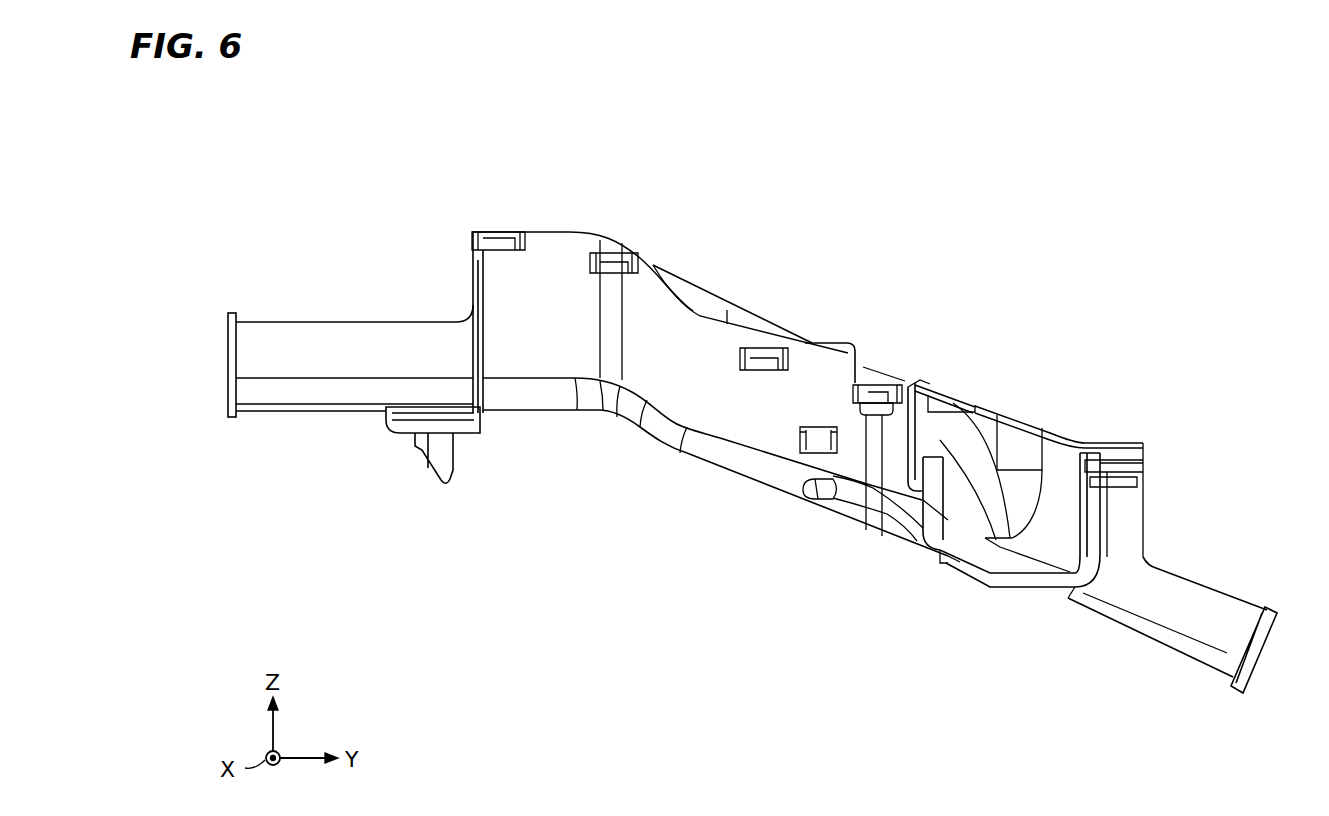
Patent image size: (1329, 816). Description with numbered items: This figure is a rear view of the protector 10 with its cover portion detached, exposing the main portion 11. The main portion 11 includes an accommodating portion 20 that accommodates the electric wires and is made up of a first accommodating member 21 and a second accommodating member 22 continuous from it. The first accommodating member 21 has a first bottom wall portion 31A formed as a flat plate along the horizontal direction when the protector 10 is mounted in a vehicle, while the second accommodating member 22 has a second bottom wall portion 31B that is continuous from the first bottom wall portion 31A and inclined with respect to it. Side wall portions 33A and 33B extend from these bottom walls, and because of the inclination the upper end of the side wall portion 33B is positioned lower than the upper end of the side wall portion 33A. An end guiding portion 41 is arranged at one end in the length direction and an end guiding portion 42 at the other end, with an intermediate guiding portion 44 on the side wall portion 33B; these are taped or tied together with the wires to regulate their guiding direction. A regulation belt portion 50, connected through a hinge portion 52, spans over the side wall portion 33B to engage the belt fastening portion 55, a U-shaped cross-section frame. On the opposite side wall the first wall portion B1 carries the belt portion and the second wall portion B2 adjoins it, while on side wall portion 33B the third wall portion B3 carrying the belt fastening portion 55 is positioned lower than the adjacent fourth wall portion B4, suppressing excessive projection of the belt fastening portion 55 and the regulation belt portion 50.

The protector 10 is at (1174, 206).
The main portion 11 is at (624, 422).
The accommodating portion 20 is at (601, 408).
The first accommodating member 21 is at (539, 397).
The second accommodating member 22 is at (757, 440).
The first bottom wall portion 31A is at (501, 413).
The second bottom wall portion 31B is at (708, 468).
The side wall portion 33A is at (541, 232).
The side wall portion 33B is at (735, 328).
The end guiding portion 41 is at (300, 398).
The end guiding portion 42 is at (1252, 663).
The intermediate guiding portion 44 is at (1012, 583).
The regulation belt portion 50 is at (935, 388).
The hinge portion 52 is at (970, 406).
The belt fastening portion 55 is at (873, 388).
The first wall portion B1 is at (963, 575).
The second wall portion B2 is at (985, 414).
The third wall portion B3 is at (877, 430).
The fourth wall portion B4 is at (823, 343).